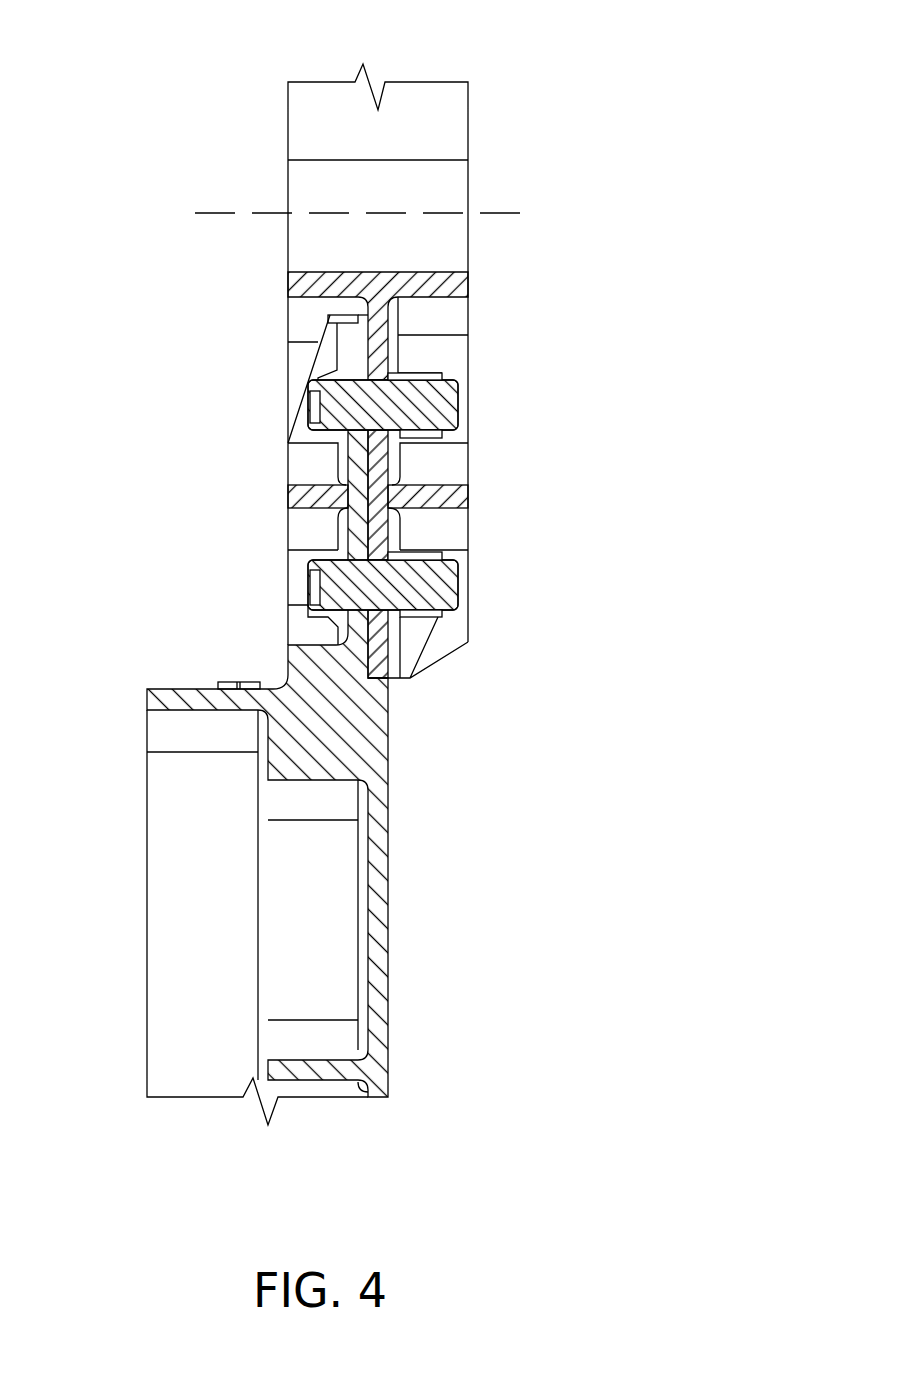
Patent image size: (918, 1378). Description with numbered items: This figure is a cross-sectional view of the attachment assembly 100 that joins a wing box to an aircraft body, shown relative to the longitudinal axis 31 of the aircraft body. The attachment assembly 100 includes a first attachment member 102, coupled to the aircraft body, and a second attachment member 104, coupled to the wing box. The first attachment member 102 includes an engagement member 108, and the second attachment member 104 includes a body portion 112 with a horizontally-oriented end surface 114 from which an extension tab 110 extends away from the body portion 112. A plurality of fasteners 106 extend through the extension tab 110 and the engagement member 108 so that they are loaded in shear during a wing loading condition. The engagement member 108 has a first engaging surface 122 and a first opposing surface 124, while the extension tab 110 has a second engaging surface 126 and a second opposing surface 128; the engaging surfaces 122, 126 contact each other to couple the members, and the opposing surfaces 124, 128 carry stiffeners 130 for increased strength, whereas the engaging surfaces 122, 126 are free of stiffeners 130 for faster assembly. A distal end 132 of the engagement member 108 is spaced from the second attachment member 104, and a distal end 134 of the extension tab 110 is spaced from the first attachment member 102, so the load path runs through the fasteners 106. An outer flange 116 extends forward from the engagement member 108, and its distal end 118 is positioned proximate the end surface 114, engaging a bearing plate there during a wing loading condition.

The attachment assembly 100 is at (508, 79).
The first attachment member 102 is at (496, 146).
The longitudinal axis 31 is at (532, 212).
The distal end of the extension tab 134 is at (357, 322).
The extension tab 110 is at (357, 365).
The outer flange 116 is at (305, 438).
The fasteners 106 is at (430, 407).
The engagement member 108 is at (382, 473).
The stiffeners 130 is at (318, 493).
The second opposing surface 128 is at (348, 517).
The second engaging surface 126 is at (385, 537).
The first opposing surface 124 is at (395, 517).
The first engaging surface 122 is at (395, 540).
The distal end of the outer flange 118 is at (295, 633).
The distal end of the engagement member 132 is at (385, 678).
The second attachment member 104 is at (437, 1005).
The end surface 114 is at (153, 689).
The body portion 112 is at (315, 920).